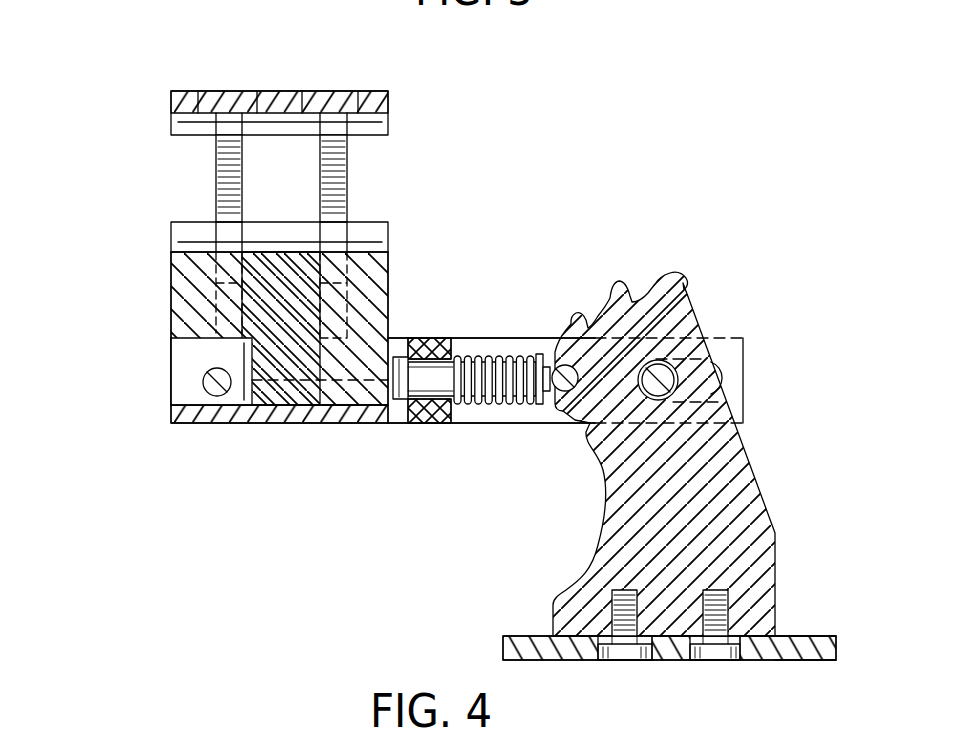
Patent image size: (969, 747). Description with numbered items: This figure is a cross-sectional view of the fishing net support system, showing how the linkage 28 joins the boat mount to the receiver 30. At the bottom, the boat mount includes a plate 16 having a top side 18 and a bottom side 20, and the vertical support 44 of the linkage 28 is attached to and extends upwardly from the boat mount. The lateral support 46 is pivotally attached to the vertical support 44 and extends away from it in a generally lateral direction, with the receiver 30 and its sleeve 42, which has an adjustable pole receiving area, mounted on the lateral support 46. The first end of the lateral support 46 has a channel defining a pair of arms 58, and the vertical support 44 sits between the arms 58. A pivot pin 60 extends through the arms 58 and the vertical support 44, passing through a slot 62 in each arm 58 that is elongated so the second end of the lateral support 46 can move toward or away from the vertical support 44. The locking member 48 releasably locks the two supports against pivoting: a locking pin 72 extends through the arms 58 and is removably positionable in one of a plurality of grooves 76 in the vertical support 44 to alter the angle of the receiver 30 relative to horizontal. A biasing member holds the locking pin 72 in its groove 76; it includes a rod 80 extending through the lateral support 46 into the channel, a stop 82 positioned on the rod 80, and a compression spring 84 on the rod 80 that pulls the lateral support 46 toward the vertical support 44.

The plate 16 is at (838, 648).
The top side 18 is at (806, 636).
The bottom side 20 is at (805, 660).
The linkage 28 is at (451, 447).
The receiver 30 is at (126, 82).
The sleeve 42 is at (168, 175).
The vertical support 44 is at (755, 480).
The lateral support 46 is at (409, 422).
The locking member 48 is at (512, 306).
The arms 58 is at (736, 375).
The pivot pin 60 is at (664, 362).
The slot 62 is at (716, 364).
The locking pin 72 is at (552, 356).
The grooves 76 is at (647, 284).
The rod 80 is at (432, 376).
The stop 82 is at (540, 425).
The compression spring 84 is at (503, 410).